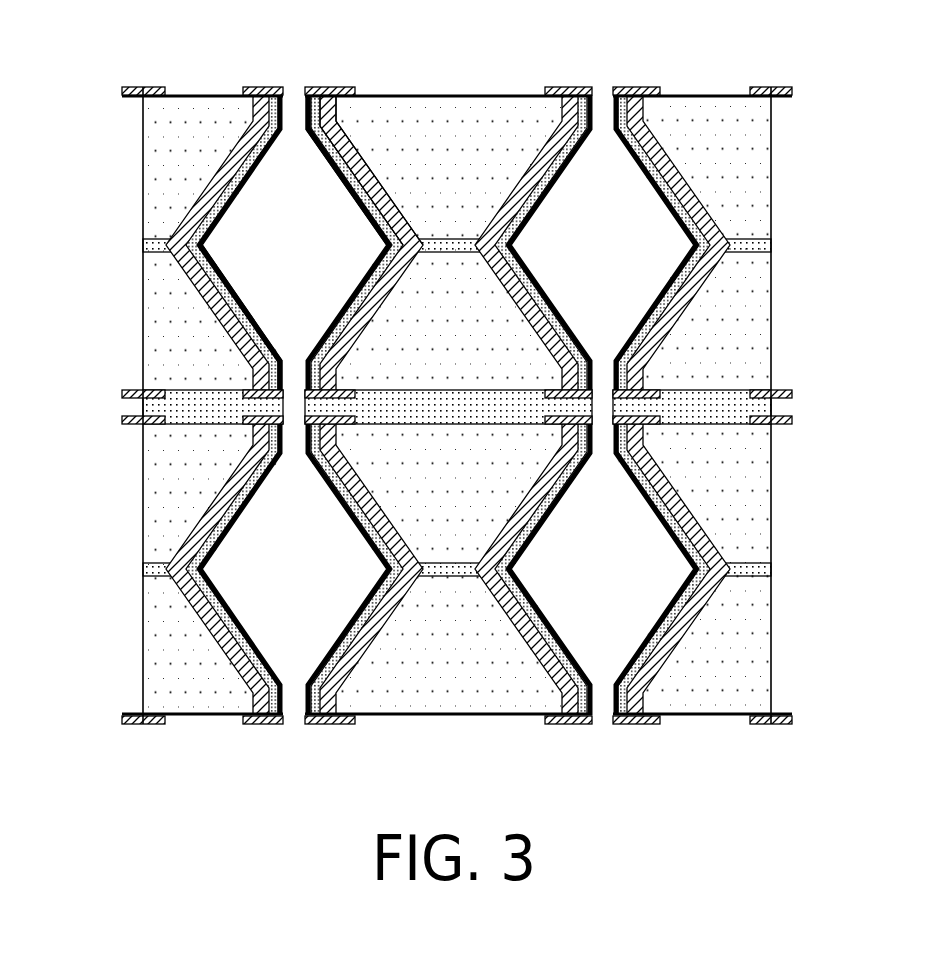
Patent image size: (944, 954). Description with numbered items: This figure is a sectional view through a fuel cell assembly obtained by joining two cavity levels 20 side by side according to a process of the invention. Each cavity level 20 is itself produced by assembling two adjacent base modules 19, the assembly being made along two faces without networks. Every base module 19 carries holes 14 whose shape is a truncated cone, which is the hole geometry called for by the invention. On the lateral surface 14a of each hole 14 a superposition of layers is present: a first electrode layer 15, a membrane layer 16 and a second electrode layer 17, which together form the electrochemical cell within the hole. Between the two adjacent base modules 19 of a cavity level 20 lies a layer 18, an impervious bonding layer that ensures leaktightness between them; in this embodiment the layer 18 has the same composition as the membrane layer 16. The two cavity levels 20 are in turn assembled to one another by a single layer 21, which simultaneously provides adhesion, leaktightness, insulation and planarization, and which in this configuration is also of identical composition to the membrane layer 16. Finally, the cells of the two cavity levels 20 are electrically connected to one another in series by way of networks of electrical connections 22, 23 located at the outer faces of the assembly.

The hole 14 is at (262, 183).
The lateral surface 14a is at (218, 208).
The first electrode layer 15 is at (362, 147).
The membrane layer 16 is at (400, 182).
The second electrode layer 17 is at (418, 222).
The impervious bonding layer 18 is at (157, 245).
The base module 19 is at (163, 138).
The cavity level 20 is at (863, 103).
The single layer 21 is at (783, 411).
The network of electrical connections 22 is at (141, 95).
The network of electrical connections 23 is at (773, 95).